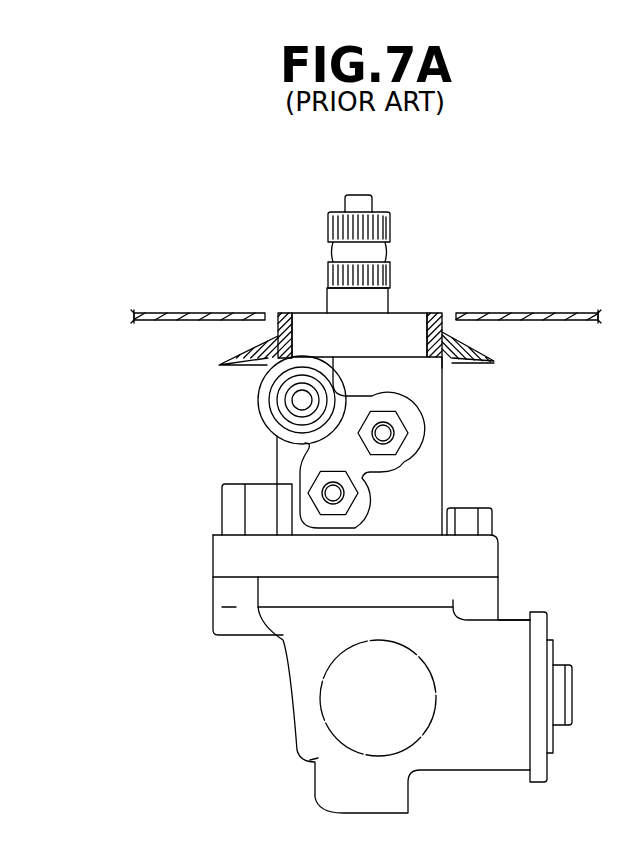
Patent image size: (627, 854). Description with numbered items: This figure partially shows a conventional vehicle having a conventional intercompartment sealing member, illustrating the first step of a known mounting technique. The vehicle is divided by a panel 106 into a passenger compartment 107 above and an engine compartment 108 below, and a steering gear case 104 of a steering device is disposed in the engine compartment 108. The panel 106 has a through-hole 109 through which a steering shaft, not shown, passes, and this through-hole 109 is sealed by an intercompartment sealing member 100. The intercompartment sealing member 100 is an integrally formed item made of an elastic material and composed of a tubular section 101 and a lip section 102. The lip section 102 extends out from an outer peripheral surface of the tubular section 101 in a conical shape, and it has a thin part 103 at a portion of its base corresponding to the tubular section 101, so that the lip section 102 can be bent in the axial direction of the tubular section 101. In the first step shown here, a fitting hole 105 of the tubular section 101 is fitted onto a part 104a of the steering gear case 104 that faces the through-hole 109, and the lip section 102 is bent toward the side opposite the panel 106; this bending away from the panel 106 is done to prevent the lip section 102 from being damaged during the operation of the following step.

The intercompartment sealing member 100 is at (228, 358).
The tubular section 101 is at (435, 313).
The lip section 102 is at (485, 358).
The thin part 103 is at (444, 328).
The steering gear case 104 is at (218, 513).
The part of the steering case facing the through-hole 104a is at (318, 343).
The fitting hole 105 is at (295, 330).
The panel 106 is at (133, 313).
The passenger compartment 107 is at (618, 153).
The engine compartment 108 is at (617, 451).
The through-hole 109 is at (274, 325).